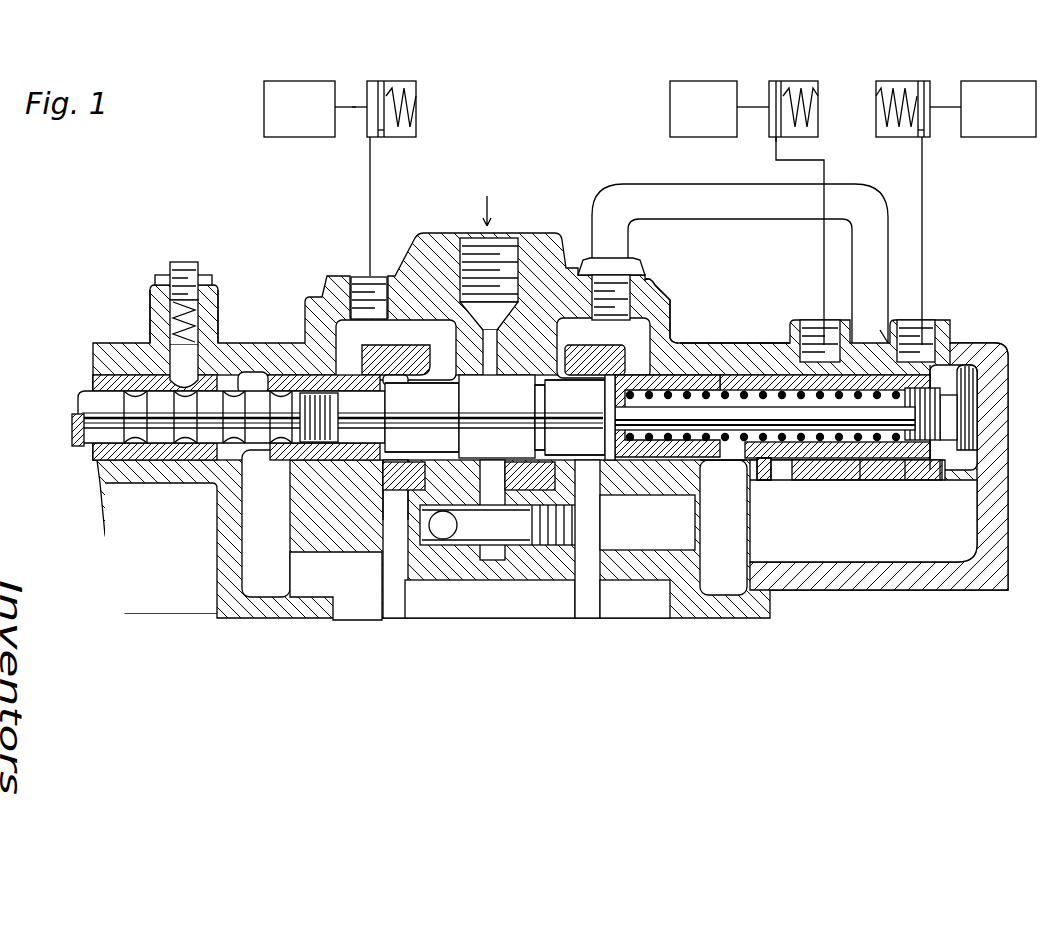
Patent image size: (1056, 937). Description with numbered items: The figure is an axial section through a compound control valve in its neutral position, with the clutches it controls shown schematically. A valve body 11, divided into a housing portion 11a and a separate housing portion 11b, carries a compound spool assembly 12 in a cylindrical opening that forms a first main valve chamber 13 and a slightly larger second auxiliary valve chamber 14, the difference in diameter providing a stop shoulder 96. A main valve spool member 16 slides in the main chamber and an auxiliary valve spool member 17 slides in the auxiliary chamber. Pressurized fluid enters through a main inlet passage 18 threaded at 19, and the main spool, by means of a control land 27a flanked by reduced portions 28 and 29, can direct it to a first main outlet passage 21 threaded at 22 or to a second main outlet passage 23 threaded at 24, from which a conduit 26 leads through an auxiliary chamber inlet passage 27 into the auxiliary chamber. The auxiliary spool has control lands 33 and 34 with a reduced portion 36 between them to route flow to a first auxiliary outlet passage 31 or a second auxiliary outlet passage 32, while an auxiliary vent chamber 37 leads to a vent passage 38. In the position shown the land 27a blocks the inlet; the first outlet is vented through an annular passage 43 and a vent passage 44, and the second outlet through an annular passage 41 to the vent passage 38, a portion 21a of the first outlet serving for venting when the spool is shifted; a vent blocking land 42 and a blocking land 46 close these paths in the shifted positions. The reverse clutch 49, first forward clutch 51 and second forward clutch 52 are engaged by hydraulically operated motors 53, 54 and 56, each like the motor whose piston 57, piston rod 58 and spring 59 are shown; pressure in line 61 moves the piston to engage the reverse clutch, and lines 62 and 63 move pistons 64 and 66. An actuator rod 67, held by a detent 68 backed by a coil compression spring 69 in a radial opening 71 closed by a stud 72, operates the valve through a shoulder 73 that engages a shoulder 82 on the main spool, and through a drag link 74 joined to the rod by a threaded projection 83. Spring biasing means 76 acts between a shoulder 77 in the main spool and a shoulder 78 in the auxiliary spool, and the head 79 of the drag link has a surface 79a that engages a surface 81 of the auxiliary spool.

The valve body 11 is at (558, 217).
The housing portion 11a is at (695, 341).
The housing portion 11b is at (1005, 362).
The compound spool assembly 12 is at (764, 480).
The first main valve chamber 13 is at (484, 468).
The second auxiliary valve chamber 14 is at (885, 470).
The main valve spool member 16 is at (521, 380).
The auxiliary valve spool member 17 is at (956, 371).
The main inlet passage 18 is at (545, 322).
The threaded portion of inlet passage 19 is at (505, 232).
The first main outlet passage 21 is at (426, 325).
The portion of first outlet passage 21a is at (312, 356).
The threaded portion of first main outlet passage 22 is at (376, 300).
The second main outlet passage 23 is at (612, 336).
The threaded portion of second main outlet passage 24 is at (615, 298).
The conduit 26 is at (684, 185).
The auxiliary chamber inlet passage 27 is at (882, 345).
The control land 27a is at (540, 412).
The reduced portion 28 is at (446, 416).
The reduced portion 29 is at (596, 418).
The first auxiliary outlet passage 31 is at (946, 345).
The second auxiliary outlet passage 32 is at (815, 352).
The control land 33 is at (862, 470).
The control land 34 is at (940, 472).
The reduced portion 36 is at (910, 464).
The auxiliary vent chamber 37 is at (853, 585).
The vent passage 38 is at (590, 612).
The annular passage 41 is at (590, 455).
The vent blocking land 42 is at (637, 362).
The annular passage 43 is at (404, 466).
The vent passage 44 is at (400, 610).
The blocking land 46 is at (346, 375).
The reverse clutch 49 is at (314, 81).
The first forward clutch 51 is at (992, 82).
The second forward clutch 52 is at (724, 82).
The hydraulically operated motor 53 is at (425, 94).
The hydraulically operated motor 54 is at (905, 84).
The hydraulically operated motor 56 is at (818, 84).
The piston 57 is at (381, 137).
The piston rod 58 is at (352, 107).
The spring 59 is at (416, 114).
The line 61 is at (372, 197).
The line 62 is at (924, 180).
The line 63 is at (826, 176).
The piston 64 is at (912, 138).
The piston 66 is at (777, 138).
The actuator rod 67 is at (78, 438).
The detent 68 is at (186, 366).
The coil compression spring 69 is at (200, 325).
The radial opening 71 is at (170, 322).
The stud 72 is at (190, 268).
The shoulder 73 is at (300, 462).
The drag link 74 is at (712, 447).
The spring biasing means 76 is at (742, 458).
The shoulder 77 is at (642, 442).
The shoulder 78 is at (832, 398).
The head 79 is at (942, 420).
The surface 79a is at (960, 410).
The surface 81 is at (905, 418).
The shoulder 82 is at (330, 396).
The threaded projection 83 is at (278, 462).
The stop shoulder 96 is at (788, 468).